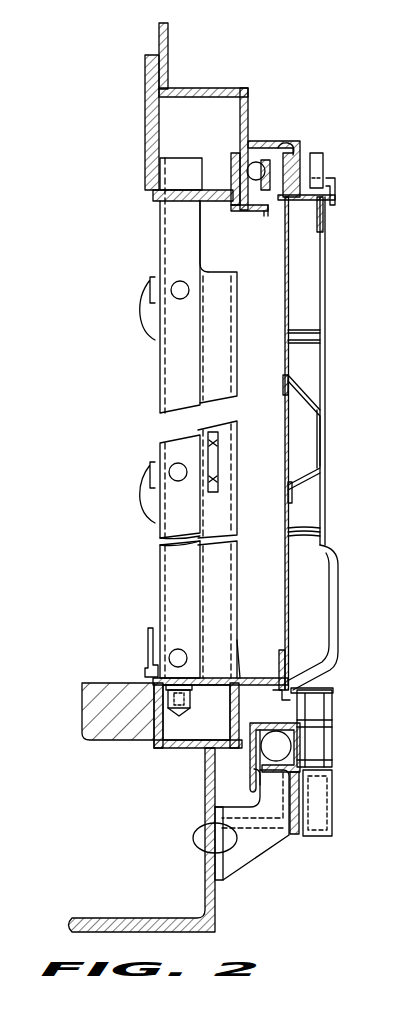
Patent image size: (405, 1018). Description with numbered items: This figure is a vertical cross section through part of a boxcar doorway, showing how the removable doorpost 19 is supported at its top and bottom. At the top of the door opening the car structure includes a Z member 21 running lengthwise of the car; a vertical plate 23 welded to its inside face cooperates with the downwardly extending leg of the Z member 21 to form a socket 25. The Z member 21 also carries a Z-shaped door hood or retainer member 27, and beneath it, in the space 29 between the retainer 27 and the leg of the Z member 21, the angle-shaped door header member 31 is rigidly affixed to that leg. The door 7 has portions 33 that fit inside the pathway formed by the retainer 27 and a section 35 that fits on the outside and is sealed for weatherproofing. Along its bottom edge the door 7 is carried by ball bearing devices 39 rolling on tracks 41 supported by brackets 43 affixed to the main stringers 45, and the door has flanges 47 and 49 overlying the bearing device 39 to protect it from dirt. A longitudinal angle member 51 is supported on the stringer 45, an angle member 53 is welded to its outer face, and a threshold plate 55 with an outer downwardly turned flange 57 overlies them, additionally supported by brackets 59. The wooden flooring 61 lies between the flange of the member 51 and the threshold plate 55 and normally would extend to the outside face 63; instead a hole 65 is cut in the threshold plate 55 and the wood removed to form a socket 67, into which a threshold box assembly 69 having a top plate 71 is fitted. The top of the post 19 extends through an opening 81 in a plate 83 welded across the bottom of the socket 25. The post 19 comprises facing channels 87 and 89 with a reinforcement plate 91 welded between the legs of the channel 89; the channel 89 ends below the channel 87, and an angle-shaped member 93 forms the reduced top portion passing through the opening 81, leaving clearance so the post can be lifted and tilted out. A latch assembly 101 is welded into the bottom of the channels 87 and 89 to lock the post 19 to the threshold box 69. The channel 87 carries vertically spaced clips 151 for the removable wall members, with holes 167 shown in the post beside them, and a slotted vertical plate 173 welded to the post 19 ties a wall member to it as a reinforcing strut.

The door 7 is at (316, 290).
The removable doorpost 19 is at (150, 386).
The Z member 21 is at (172, 90).
The vertical plate 23 is at (148, 112).
The socket 25 is at (218, 90).
The door hood or retainer member 27 is at (266, 142).
The hinge bracket 29 is at (282, 141).
The door header member 31 is at (246, 158).
The door portions 33 is at (301, 145).
The door section 35 is at (323, 165).
The ball bearing device 39 is at (292, 738).
The track 41 is at (332, 766).
The bracket 43 is at (262, 850).
The main stringer 45 is at (215, 910).
The door flange 47 is at (250, 770).
The door flange 49 is at (304, 748).
The angle member 51 is at (242, 768).
The angle member 53 is at (251, 660).
The threshold plate 55 is at (251, 686).
The downwardly turned flange 57 is at (316, 672).
The bracket 59 is at (289, 668).
The wooden flooring 61 is at (112, 688).
The outside face 63 is at (228, 726).
The hole 65 is at (150, 680).
The socket 67 is at (165, 750).
The threshold box assembly 69 is at (130, 736).
The top plate 71 is at (118, 711).
The opening 81 is at (162, 210).
The plate 83 is at (208, 206).
The channel 87 is at (170, 348).
The channel 89 is at (222, 320).
The reinforcement plate 91 is at (222, 548).
The angle-shaped member 93 is at (215, 262).
The latch assembly 101 is at (186, 684).
The clip 151 is at (140, 300).
The hole 167 is at (172, 284).
The vertical plate 173 is at (219, 450).